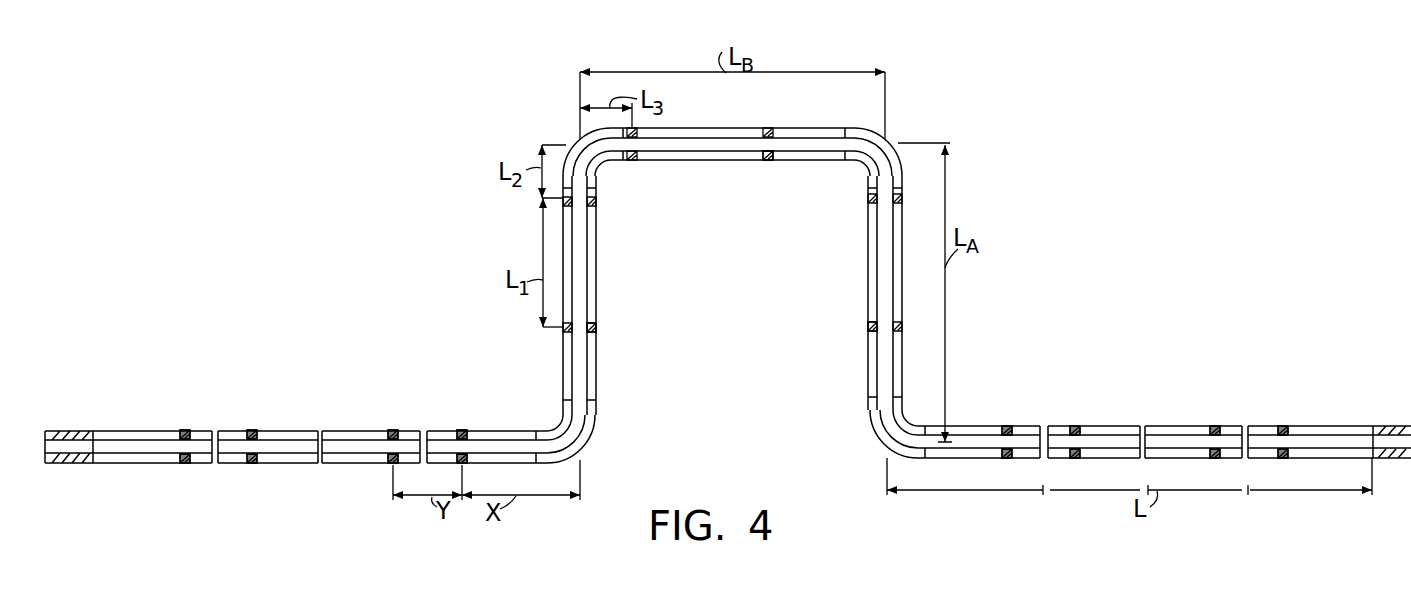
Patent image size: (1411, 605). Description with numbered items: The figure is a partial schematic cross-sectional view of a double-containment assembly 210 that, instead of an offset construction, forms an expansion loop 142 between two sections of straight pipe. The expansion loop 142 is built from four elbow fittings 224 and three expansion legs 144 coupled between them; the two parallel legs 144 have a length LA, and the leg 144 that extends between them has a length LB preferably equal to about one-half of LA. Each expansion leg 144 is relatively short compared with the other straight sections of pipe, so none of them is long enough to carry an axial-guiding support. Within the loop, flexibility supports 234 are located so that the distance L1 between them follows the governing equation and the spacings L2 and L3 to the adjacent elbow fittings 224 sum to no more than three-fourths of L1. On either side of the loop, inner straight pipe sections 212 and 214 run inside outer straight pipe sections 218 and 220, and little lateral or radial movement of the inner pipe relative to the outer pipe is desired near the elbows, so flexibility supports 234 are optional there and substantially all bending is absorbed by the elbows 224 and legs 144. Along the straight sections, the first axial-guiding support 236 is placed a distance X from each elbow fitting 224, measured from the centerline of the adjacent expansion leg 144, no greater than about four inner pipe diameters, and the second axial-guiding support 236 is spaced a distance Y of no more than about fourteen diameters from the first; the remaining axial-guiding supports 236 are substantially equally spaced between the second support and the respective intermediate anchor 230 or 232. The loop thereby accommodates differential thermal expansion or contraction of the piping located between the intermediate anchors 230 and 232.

The double-containment assembly 210 is at (923, 68).
The elbow fitting 224 is at (565, 129).
The expansion loop 142 is at (783, 119).
The expansion leg 144 is at (791, 171).
The flexibility support 234 is at (766, 153).
The axial-guiding support 236 is at (250, 430).
The inner straight pipe section 214 is at (307, 430).
The outer straight pipe section 220 is at (278, 464).
The inner straight pipe section 212 is at (1167, 426).
The outer straight pipe section 218 is at (1084, 459).
The intermediate anchor 232 is at (72, 430).
The intermediate anchor 230 is at (1396, 425).